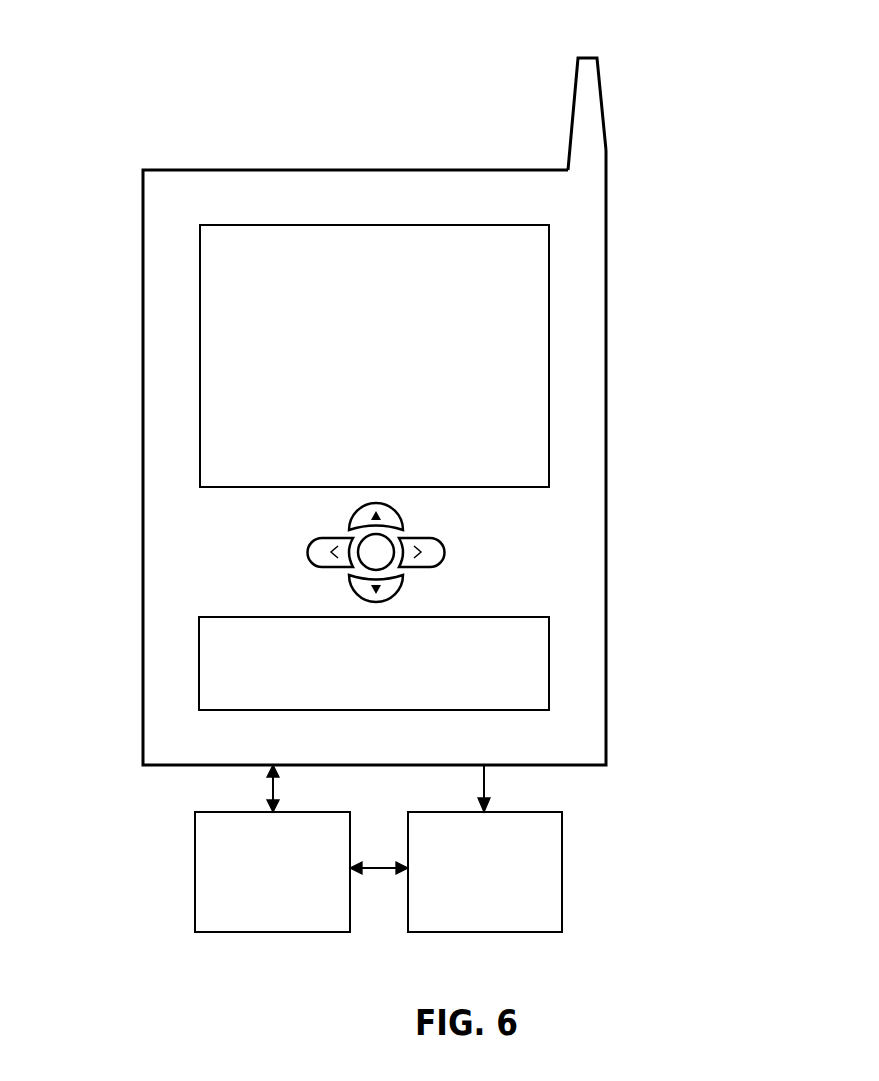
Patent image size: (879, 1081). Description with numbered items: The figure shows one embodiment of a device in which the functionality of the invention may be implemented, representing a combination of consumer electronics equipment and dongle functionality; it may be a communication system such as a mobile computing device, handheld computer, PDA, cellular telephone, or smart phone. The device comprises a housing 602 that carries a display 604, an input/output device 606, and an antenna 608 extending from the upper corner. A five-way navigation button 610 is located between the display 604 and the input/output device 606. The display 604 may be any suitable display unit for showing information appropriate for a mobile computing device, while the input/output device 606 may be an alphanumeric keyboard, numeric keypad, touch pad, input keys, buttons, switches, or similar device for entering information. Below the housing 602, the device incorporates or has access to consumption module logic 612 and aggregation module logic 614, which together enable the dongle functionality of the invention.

The housing 602 is at (607, 469).
The display 604 is at (549, 244).
The input/output (I/O) device 606 is at (549, 653).
The antenna 608 is at (572, 108).
The five-way navigation button 610 is at (446, 543).
The consumption module logic 612 is at (272, 848).
The aggregation module logic 614 is at (456, 848).